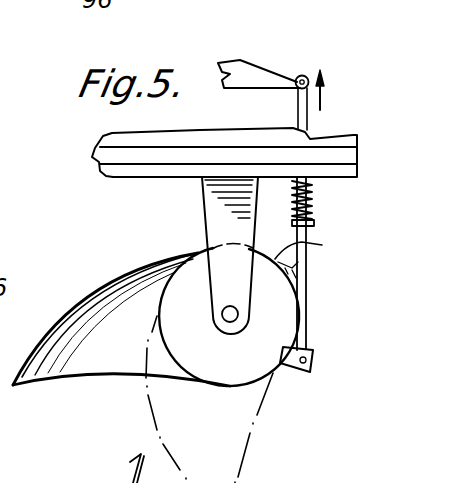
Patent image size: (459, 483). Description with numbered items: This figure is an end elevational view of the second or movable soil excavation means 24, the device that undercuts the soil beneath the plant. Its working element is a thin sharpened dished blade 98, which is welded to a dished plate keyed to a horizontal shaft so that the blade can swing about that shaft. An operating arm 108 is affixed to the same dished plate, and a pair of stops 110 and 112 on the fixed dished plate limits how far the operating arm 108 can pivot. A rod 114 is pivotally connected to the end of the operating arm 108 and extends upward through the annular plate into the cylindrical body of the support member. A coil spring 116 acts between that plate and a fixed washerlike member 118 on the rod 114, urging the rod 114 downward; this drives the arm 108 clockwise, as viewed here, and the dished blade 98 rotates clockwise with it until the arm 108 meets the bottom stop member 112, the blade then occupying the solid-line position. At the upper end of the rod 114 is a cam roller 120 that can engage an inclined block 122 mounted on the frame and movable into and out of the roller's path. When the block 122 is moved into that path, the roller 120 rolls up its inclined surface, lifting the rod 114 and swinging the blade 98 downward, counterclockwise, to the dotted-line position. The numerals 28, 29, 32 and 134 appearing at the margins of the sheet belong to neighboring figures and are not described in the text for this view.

The movable soil excavation means 24 is at (139, 384).
The dished blade 98 is at (98, 303).
The operating arm 108 is at (313, 366).
The stop 110 is at (321, 259).
The bottom stop member 112 is at (281, 369).
The rod 114 is at (308, 325).
The coil spring 116 is at (313, 201).
The washerlike member 118 is at (314, 226).
The cam roller 120 is at (303, 72).
The inclined block 122 is at (245, 72).
The frame member 28 is at (14, 151).
The frame member 29 is at (14, 18).
The frame member 32 is at (15, 244).
The frame member 134 is at (19, 188).